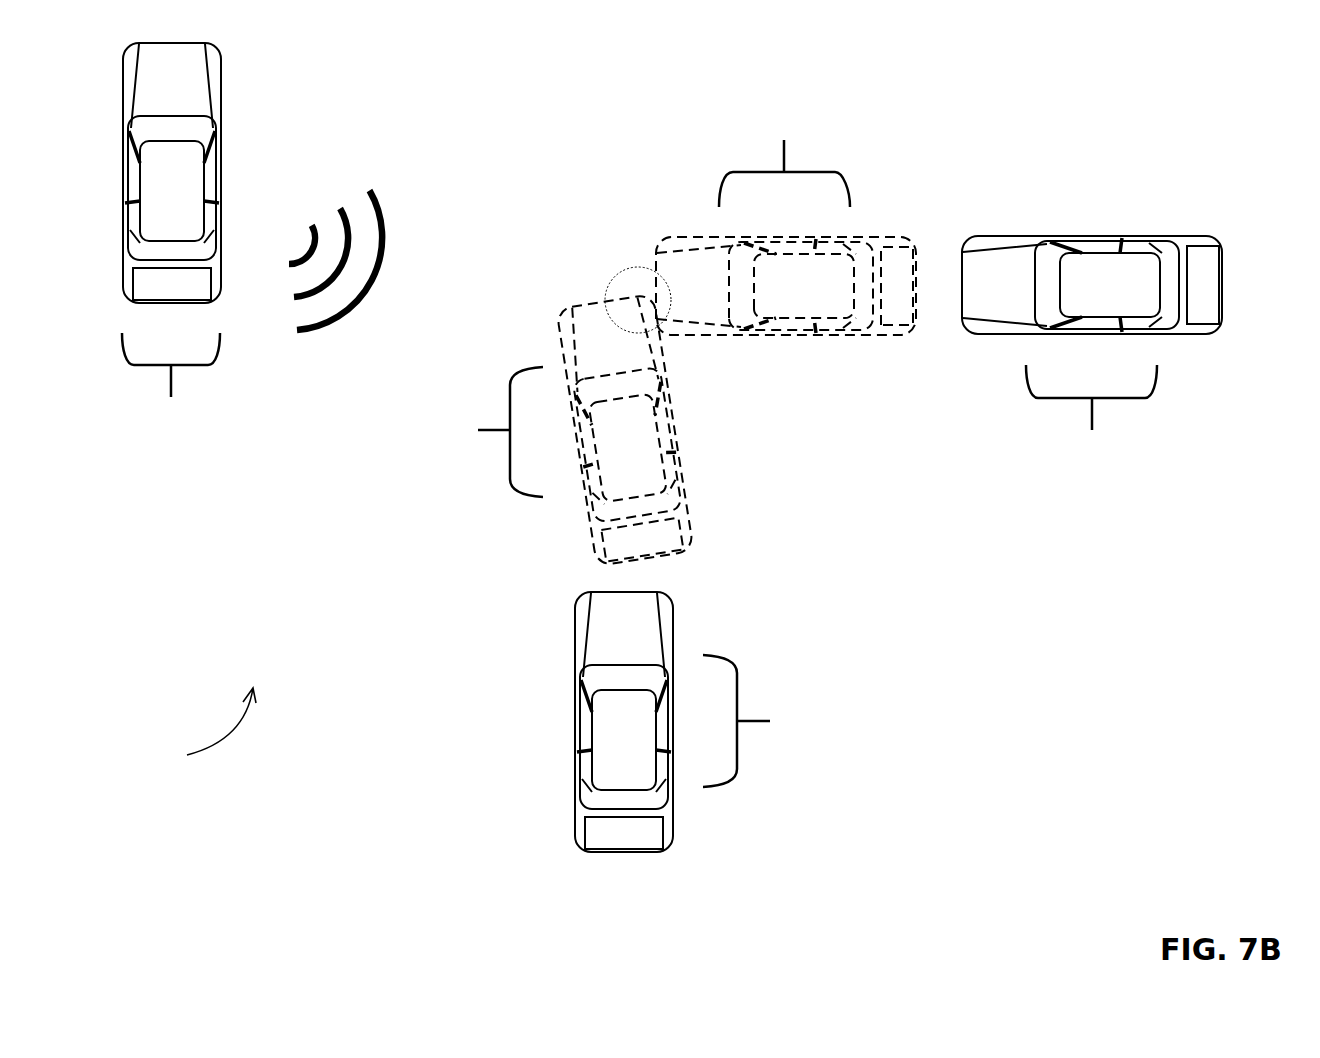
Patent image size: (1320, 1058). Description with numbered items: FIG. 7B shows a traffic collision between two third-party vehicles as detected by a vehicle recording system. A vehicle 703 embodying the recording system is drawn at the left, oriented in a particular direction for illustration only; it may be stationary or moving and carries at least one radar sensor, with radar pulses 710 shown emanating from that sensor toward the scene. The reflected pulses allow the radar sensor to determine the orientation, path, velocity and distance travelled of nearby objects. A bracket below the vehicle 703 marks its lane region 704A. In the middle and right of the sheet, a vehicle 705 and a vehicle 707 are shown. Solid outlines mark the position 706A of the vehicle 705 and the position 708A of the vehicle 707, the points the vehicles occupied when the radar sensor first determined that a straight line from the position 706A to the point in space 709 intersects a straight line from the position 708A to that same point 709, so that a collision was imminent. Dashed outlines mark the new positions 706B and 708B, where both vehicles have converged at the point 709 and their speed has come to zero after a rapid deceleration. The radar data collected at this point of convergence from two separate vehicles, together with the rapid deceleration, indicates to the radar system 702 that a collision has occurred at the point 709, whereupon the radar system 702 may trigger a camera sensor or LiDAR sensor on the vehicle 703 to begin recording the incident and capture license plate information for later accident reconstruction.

The radar system 702 is at (194, 729).
The vehicle 703 is at (222, 77).
The first lane position 704A is at (171, 382).
The vehicle 705 is at (574, 720).
The position of vehicle 705 706A is at (769, 721).
The new position of vehicle 705 706B is at (477, 432).
The vehicle 707 is at (1090, 237).
The position of vehicle 707 708A is at (1091, 414).
The new position of vehicle 707 708B is at (784, 160).
The point in space 709 is at (638, 268).
The radar pulses 710 is at (283, 237).